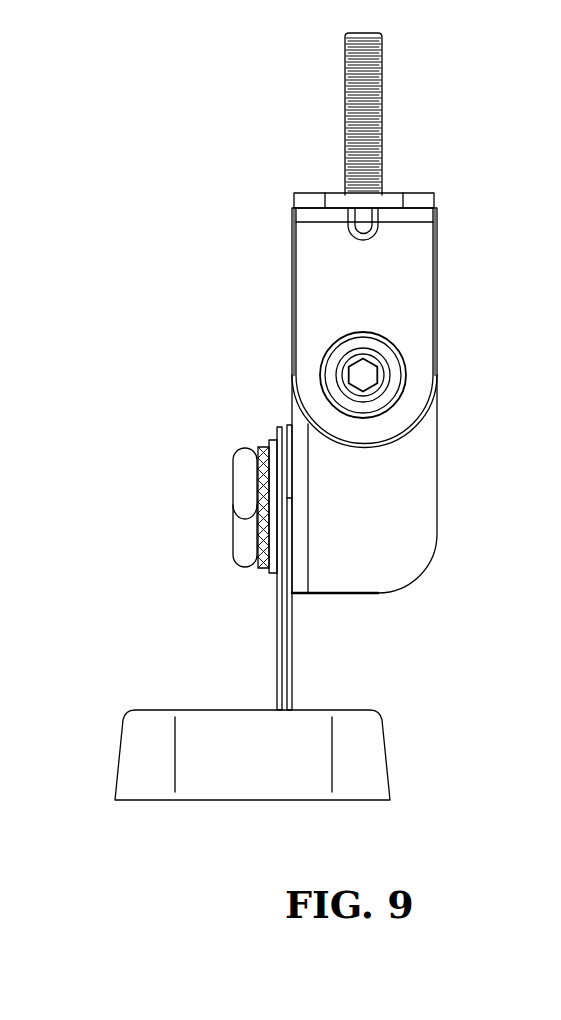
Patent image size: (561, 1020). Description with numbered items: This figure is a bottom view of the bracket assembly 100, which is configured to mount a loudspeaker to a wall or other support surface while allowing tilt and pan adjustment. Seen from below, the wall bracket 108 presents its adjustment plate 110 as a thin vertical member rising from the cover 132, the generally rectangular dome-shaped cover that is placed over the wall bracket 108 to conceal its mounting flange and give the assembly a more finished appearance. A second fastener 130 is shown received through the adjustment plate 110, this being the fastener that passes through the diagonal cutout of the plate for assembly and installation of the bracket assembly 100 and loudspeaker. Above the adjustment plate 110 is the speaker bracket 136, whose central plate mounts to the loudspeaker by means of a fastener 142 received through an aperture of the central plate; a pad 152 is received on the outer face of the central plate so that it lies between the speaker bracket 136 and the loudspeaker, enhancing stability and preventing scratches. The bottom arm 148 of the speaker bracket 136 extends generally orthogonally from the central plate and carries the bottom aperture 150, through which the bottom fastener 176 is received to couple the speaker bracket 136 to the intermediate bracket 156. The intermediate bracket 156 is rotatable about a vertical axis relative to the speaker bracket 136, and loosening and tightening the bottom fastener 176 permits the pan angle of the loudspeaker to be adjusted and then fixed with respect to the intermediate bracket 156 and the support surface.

The bracket assembly 100 is at (176, 147).
The wall bracket 108 is at (295, 683).
The adjustment plate 110 is at (277, 667).
The second fastener 130 is at (233, 485).
The cover 132 is at (170, 803).
The speaker bracket 136 is at (290, 272).
The fastener 142 is at (343, 102).
The bottom arm 148 is at (420, 283).
The bottom aperture 150 is at (330, 378).
The pad 152 is at (413, 196).
The intermediate bracket 156 is at (402, 547).
The bottom fastener 176 is at (365, 377).